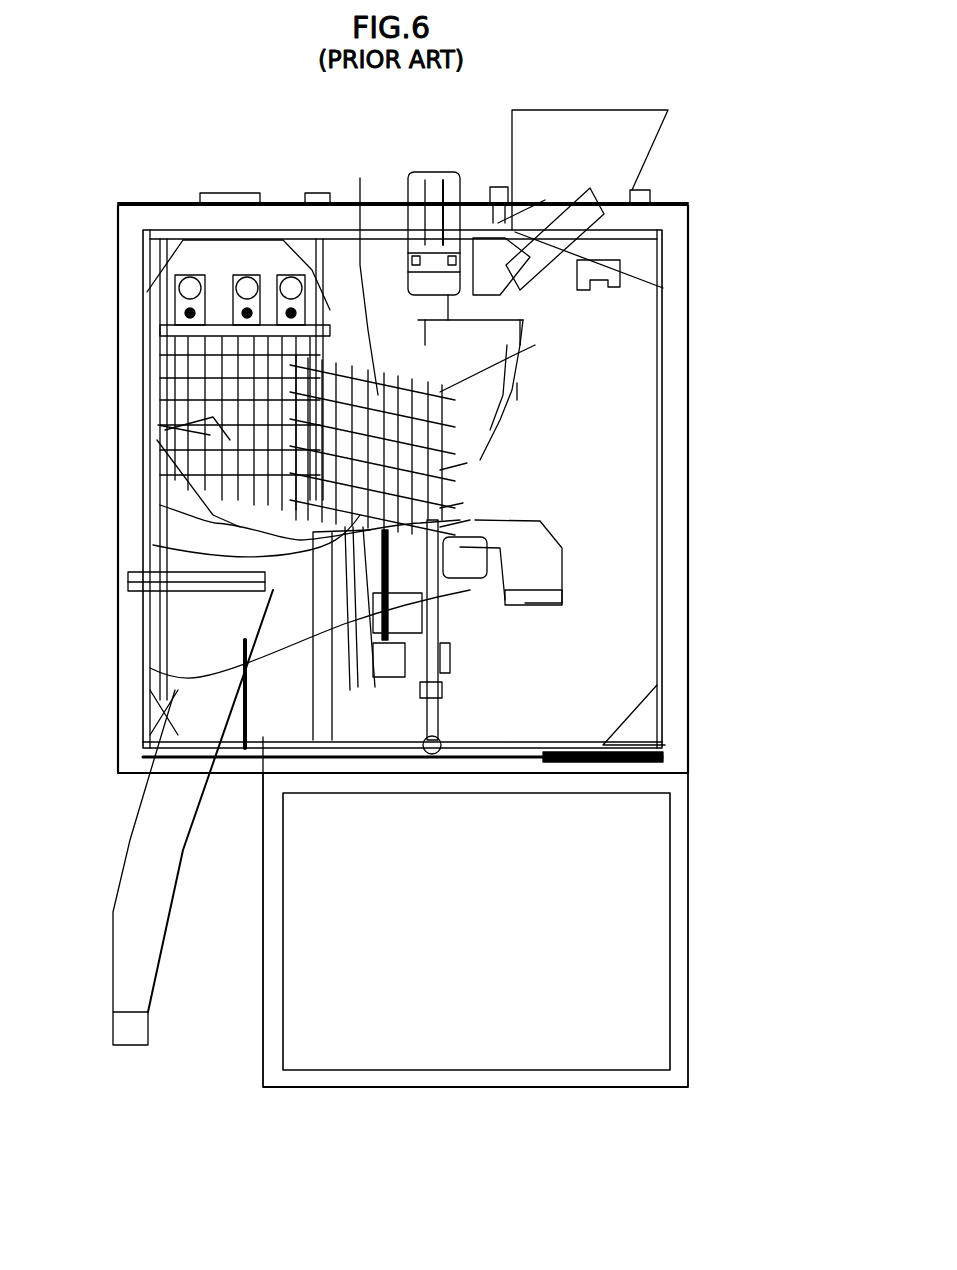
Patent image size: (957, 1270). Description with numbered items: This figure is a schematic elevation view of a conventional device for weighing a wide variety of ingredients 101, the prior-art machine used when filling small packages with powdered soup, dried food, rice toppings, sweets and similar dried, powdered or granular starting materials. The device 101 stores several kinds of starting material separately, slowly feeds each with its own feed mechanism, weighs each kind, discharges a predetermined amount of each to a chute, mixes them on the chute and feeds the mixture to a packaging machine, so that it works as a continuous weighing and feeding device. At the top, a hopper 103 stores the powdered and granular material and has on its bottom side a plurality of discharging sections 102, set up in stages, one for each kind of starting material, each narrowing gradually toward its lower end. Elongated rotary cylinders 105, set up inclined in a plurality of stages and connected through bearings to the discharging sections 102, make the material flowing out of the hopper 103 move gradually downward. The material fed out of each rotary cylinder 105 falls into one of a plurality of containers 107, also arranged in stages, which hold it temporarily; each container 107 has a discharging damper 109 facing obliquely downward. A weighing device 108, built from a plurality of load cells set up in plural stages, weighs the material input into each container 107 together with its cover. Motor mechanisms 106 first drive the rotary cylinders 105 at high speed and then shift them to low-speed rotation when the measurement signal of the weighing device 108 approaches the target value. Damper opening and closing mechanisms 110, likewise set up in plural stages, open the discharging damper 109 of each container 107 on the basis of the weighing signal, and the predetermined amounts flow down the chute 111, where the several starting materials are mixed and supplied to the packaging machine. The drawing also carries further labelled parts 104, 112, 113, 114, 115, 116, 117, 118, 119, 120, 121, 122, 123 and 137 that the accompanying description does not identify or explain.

The device for weighing a wide variety of ingredients 101 is at (698, 197).
The discharging section 102 is at (467, 463).
The hopper 103 is at (488, 403).
The hot water tank 104 is at (405, 385).
The rotary cylinders 105 is at (390, 400).
The motor mechanisms 106 is at (472, 654).
The containers 107 is at (210, 435).
The weighing device 108 is at (215, 335).
The discharging damper 109 is at (205, 460).
The damper opening and closing mechanisms 110 is at (200, 410).
The chute 111 is at (177, 657).
The cabinet bottom plate 112 is at (137, 745).
The canister outlet 113 is at (517, 383).
The mixing nozzle 114 is at (463, 503).
The nozzle holder 115 is at (470, 520).
The support frame 116 is at (350, 380).
The cup conveying member 117 is at (153, 545).
The bottom bracket 118 is at (655, 677).
The water supply pipe 119 is at (350, 266).
The cup stocker hopper 120 is at (525, 345).
The cup guide panel 121 is at (565, 590).
The cup tray 122 is at (150, 668).
The guide plate 123 is at (160, 505).
The discharge chute 137 is at (140, 873).